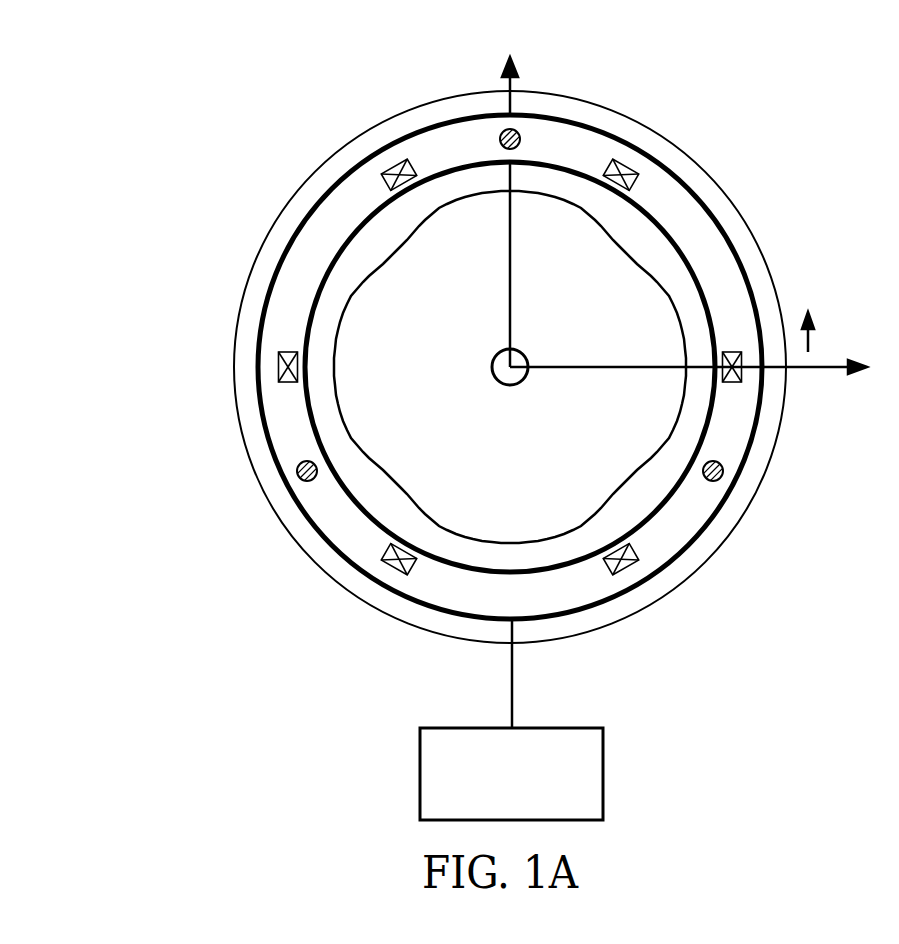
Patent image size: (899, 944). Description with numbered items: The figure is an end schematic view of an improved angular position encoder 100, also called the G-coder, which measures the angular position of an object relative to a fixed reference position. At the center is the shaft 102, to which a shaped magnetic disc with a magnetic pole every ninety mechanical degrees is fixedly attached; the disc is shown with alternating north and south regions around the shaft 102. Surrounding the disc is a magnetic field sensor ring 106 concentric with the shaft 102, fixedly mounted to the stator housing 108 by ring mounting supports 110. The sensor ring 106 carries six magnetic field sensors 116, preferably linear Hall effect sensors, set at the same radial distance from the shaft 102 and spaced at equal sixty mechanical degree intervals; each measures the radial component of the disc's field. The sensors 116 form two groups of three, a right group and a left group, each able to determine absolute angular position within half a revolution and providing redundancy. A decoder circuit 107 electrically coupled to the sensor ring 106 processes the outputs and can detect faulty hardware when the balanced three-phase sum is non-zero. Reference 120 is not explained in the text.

The position encoder 100 is at (260, 800).
The shaft 102 is at (500, 378).
The magnetic field sensor ring 106 is at (325, 235).
The decoder circuit 107 is at (596, 810).
The stator housing 108 is at (483, 92).
The ring mounting supports 110 is at (516, 131).
The magnetic field sensors 116 is at (397, 163).
The rotor magnet 120 is at (543, 553).